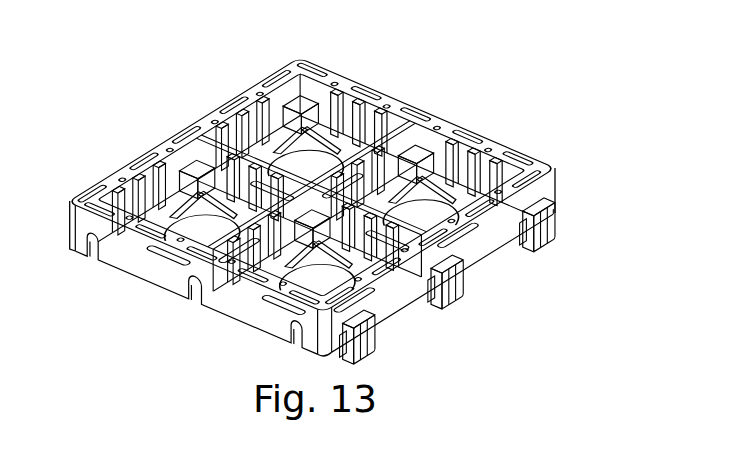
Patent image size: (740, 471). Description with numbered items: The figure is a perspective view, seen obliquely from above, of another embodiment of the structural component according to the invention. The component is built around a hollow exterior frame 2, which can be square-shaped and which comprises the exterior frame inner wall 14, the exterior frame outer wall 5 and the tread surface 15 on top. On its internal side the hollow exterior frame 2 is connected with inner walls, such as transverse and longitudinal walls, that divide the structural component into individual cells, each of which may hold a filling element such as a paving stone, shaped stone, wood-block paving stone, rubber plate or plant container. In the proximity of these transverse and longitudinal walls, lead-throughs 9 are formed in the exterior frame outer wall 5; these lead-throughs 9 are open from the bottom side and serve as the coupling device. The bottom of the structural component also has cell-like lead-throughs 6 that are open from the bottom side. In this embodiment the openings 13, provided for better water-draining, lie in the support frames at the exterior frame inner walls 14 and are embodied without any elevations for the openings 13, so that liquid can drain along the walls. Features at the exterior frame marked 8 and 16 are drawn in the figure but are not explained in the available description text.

The hollow exterior frame 2 is at (426, 99).
The exterior frame outer wall 5 is at (548, 192).
The cell-like lead-throughs 6 is at (515, 171).
The clip 8 is at (559, 222).
The lead-throughs 9 is at (92, 252).
The openings 13 is at (345, 126).
The exterior frame inner wall 14 is at (533, 164).
The tread surface 15 is at (556, 169).
The slot 16 is at (328, 68).